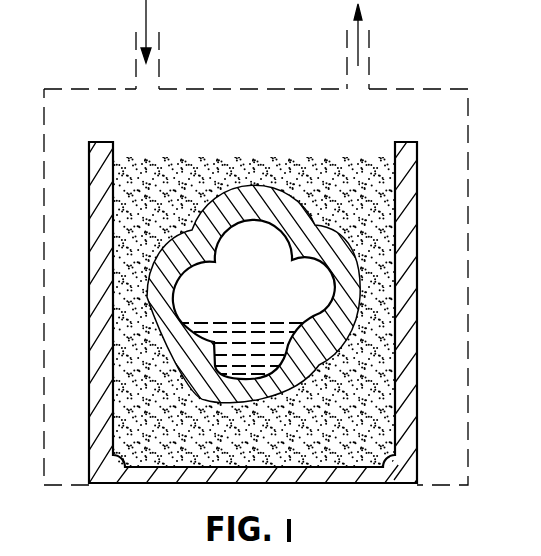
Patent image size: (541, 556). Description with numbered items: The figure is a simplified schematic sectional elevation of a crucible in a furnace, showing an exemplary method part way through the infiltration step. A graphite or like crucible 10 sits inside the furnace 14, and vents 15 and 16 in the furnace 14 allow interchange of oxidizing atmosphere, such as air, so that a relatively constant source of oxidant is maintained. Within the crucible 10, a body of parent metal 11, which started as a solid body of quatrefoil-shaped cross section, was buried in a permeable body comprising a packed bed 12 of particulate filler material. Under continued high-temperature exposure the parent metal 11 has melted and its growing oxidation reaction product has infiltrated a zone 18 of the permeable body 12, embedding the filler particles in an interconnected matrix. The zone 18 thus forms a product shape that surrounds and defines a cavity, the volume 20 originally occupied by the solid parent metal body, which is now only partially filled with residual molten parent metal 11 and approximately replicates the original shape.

The crucible 10 is at (408, 144).
The parent metal 11 is at (242, 350).
The bed of particulate filler material 12 is at (380, 180).
The furnace 14 is at (213, 89).
The vent 15 is at (159, 53).
The vent 16 is at (369, 52).
The zone 18 is at (348, 263).
The volume 20 is at (258, 268).